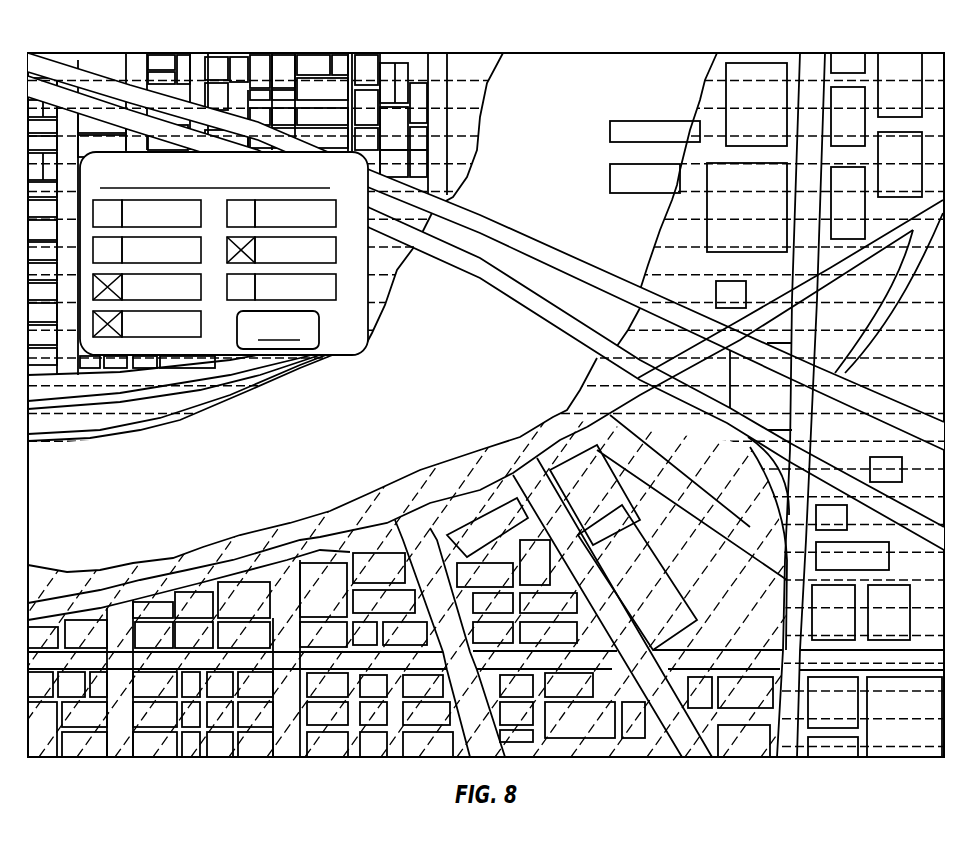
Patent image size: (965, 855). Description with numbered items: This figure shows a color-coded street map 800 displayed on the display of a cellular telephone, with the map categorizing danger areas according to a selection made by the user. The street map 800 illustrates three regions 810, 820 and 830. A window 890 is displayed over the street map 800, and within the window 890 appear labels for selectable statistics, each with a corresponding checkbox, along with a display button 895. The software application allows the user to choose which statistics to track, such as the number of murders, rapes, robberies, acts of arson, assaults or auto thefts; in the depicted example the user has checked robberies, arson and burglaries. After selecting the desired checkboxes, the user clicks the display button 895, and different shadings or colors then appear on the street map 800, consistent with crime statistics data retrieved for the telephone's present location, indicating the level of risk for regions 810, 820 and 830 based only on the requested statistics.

The street map 800 is at (482, 388).
The region 810 is at (678, 199).
The region 820 is at (133, 405).
The region 830 is at (207, 548).
The window 890 is at (246, 290).
The display button 895 is at (347, 352).